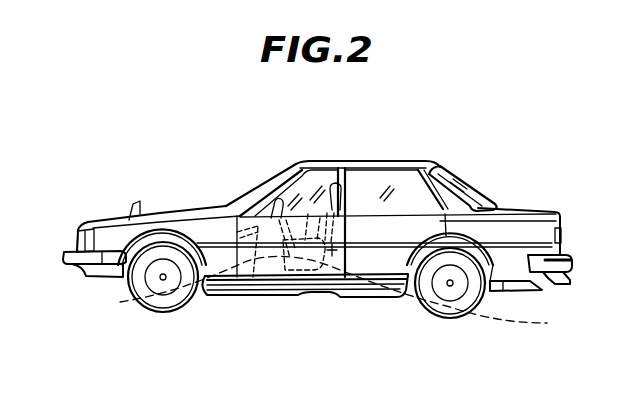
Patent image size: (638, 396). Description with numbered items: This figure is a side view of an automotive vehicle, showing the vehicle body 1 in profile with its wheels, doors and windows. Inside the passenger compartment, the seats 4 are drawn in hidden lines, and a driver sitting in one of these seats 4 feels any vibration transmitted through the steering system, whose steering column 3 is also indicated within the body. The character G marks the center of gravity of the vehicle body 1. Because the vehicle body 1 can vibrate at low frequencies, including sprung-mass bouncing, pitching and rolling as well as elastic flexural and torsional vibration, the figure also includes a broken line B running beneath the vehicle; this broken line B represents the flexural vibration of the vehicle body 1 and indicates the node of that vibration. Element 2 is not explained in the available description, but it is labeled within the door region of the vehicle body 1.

The vehicle body 1 is at (429, 164).
The front seat 2 is at (280, 197).
The steering column 3 is at (252, 280).
The seats 4 is at (344, 199).
The center of gravity G is at (331, 256).
The broken line B is at (504, 320).